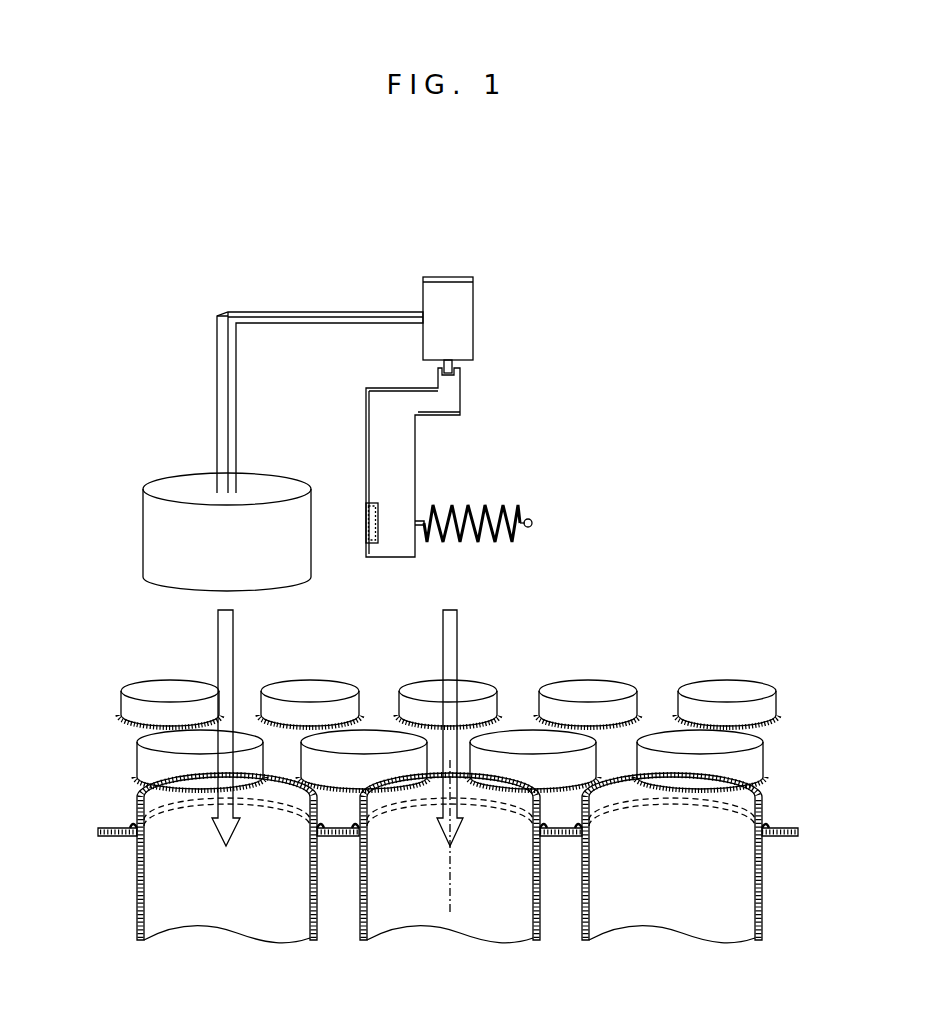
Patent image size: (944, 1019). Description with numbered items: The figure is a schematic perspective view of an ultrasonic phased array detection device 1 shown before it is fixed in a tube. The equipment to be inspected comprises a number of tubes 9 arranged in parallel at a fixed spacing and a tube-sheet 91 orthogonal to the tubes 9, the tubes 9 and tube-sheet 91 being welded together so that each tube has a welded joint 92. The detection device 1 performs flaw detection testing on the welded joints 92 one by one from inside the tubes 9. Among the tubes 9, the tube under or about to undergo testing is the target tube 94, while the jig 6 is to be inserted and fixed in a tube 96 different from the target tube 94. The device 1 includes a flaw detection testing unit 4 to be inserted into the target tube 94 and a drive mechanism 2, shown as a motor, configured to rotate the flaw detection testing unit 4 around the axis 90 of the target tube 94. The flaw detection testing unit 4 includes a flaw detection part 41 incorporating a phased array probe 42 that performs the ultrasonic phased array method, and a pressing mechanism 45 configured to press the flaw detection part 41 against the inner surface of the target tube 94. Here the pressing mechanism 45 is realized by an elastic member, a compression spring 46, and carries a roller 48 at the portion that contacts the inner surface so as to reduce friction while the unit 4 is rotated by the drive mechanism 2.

The ultrasonic phased array detection device 1 is at (690, 247).
The drive mechanism 2 is at (484, 300).
The flaw detection testing unit 4 is at (484, 411).
The jig 6 is at (184, 468).
The flaw detection part 41 is at (368, 505).
The phased array probe 42 is at (368, 530).
The pressing mechanism 45 is at (506, 496).
The compression spring 46 is at (440, 544).
The roller 48 is at (536, 523).
The tube 9 is at (448, 805).
The welded joint 92 is at (120, 718).
The tube-sheet 91 is at (780, 838).
The axis 90 is at (450, 885).
The tube different from the target tube 96 is at (232, 920).
The target tube 94 is at (415, 918).